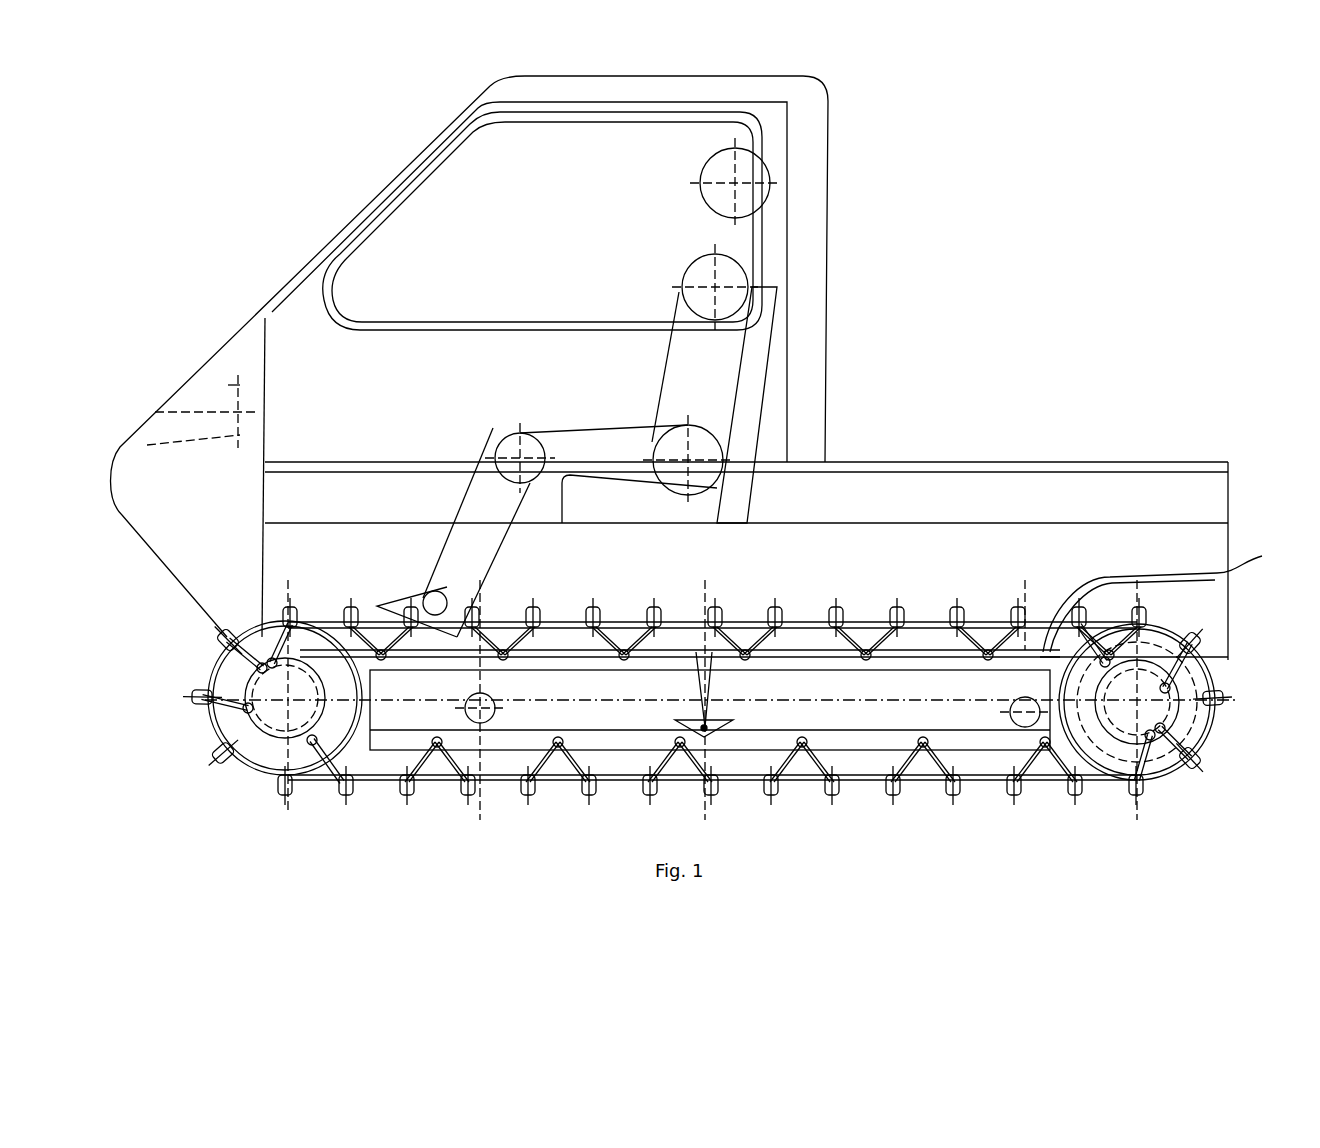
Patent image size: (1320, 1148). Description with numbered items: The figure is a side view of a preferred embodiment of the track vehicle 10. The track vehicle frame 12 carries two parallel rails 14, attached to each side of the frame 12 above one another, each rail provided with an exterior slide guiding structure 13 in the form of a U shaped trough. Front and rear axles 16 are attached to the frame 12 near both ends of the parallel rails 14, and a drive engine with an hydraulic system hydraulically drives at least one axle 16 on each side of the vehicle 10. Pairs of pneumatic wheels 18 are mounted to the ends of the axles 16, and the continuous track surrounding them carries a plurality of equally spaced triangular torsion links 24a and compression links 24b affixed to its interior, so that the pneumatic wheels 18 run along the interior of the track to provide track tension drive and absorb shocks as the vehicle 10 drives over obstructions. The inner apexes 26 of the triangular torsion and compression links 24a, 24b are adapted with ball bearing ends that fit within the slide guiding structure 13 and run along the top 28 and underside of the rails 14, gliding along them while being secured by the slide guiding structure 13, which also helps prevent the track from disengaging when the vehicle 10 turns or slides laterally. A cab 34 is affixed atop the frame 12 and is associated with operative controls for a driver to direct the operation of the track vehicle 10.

The track vehicle 10 is at (1003, 392).
The track vehicle frame 12 is at (1215, 635).
The slide guiding structure 13 is at (1166, 600).
The parallel rails 14 is at (403, 663).
The front and rear axles 16 is at (1138, 703).
The pneumatic wheels 18 is at (230, 675).
The triangular torsion links 24a is at (1058, 770).
The compression links 24b is at (912, 772).
The inner apexes 26 is at (793, 735).
The top of the rails 28 is at (800, 657).
The cab 34 is at (813, 262).